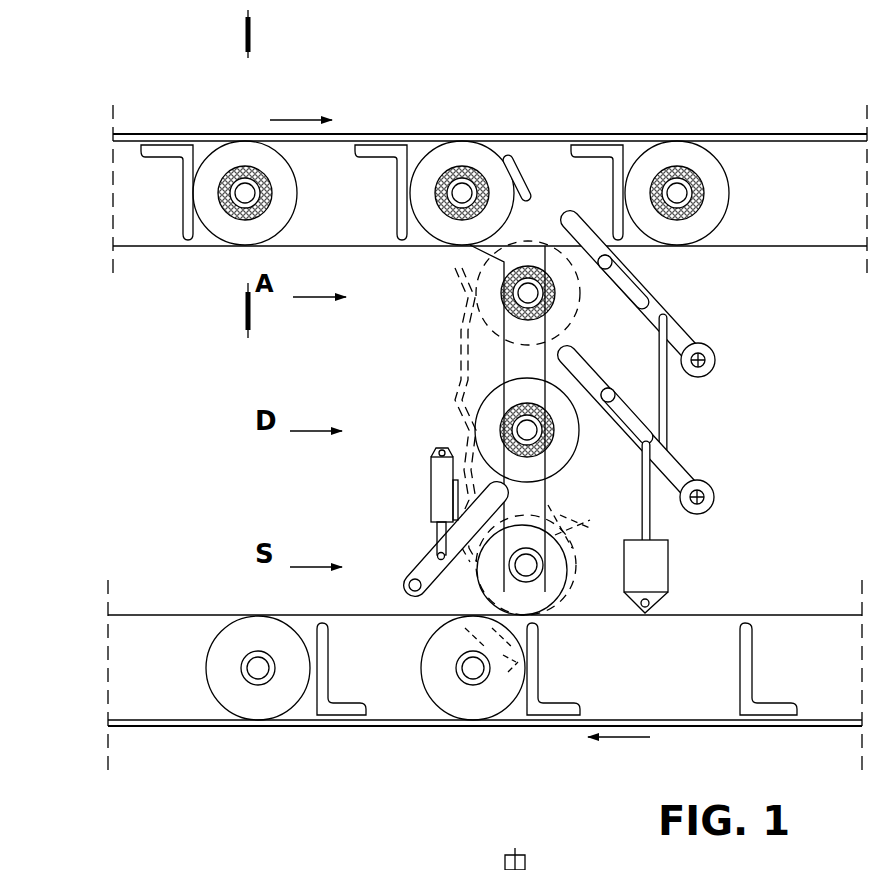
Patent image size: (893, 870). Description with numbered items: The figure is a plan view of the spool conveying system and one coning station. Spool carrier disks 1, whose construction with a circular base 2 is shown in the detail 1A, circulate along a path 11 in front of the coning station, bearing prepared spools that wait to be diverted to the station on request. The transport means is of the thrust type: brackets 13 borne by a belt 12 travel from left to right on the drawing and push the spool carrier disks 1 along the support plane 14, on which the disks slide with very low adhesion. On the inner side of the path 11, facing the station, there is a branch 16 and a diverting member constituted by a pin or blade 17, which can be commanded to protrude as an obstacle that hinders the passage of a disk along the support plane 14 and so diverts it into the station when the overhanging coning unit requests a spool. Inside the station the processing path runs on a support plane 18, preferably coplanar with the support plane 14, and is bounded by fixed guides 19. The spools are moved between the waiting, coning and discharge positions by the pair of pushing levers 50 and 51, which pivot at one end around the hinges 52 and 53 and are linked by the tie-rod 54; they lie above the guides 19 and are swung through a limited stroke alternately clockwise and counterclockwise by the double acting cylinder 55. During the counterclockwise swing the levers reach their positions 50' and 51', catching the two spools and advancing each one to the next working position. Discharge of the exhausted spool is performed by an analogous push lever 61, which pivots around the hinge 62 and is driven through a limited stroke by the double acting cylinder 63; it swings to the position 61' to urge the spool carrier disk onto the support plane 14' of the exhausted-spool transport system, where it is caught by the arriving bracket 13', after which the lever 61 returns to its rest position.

The spool carrier disk 1 is at (449, 130).
The detail of spool carrier disk 1A is at (238, 30).
The circular base 2 is at (716, 176).
The path 11 is at (641, 130).
The belt 12 is at (832, 134).
The brackets 13 is at (175, 157).
The arriving bracket 13' is at (541, 703).
The support plane 14 is at (80, 190).
The support plane of exhausted spool transport system 14' is at (78, 675).
The branch 16 is at (503, 258).
The pin or blade 17 is at (509, 162).
The support plane 18 is at (514, 373).
The fixed guides 19 is at (548, 372).
The pushing lever 50 is at (665, 290).
The position of pushing lever 50' is at (632, 426).
The pushing lever 51 is at (615, 378).
The position of pushing lever 51' is at (586, 516).
The hinge 52 is at (705, 361).
The hinge 53 is at (714, 497).
The tie-rod 54 is at (668, 397).
The double acting hydraulic cylinder 55 is at (628, 598).
The push lever 61 is at (456, 529).
The position of push lever 61' is at (491, 706).
The hinge 62 is at (405, 588).
The double acting cylinder 63 is at (431, 490).